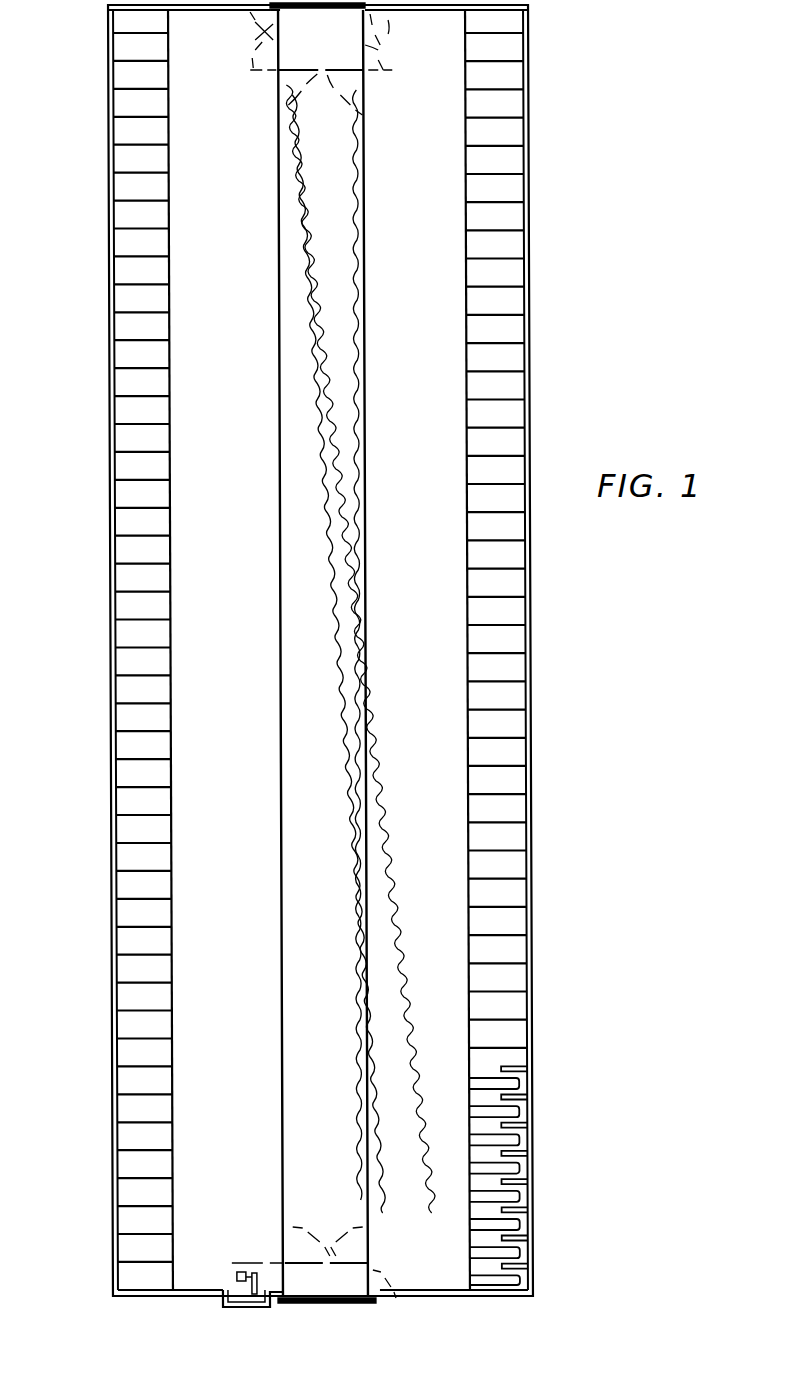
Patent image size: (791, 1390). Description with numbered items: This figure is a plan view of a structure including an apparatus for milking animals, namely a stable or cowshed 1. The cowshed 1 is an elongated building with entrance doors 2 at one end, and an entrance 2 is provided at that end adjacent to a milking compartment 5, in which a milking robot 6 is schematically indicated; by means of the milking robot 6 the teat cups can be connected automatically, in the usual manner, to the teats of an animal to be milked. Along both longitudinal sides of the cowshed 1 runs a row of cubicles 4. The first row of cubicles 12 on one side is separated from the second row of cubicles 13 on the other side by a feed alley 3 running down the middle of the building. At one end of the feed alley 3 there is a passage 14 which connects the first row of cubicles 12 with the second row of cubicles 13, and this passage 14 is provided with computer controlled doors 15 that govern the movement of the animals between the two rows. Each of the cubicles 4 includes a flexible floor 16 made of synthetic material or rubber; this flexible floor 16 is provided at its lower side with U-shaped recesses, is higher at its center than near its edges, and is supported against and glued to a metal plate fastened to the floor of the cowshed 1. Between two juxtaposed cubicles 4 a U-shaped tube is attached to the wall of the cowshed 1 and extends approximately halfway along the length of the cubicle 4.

The cowshed 1 is at (107, 535).
The entrance doors 2 is at (342, 5).
The feed alley 3 is at (327, 354).
The cubicles 4 is at (168, 573).
The milking compartment 5 is at (243, 1262).
The milking robot 6 is at (248, 1297).
The first row of cubicles 12 is at (172, 293).
The second row of cubicles 13 is at (468, 265).
The passage 14 is at (308, 55).
The computer controlled doors 15 is at (262, 38).
The flexible floor 16 is at (472, 1088).